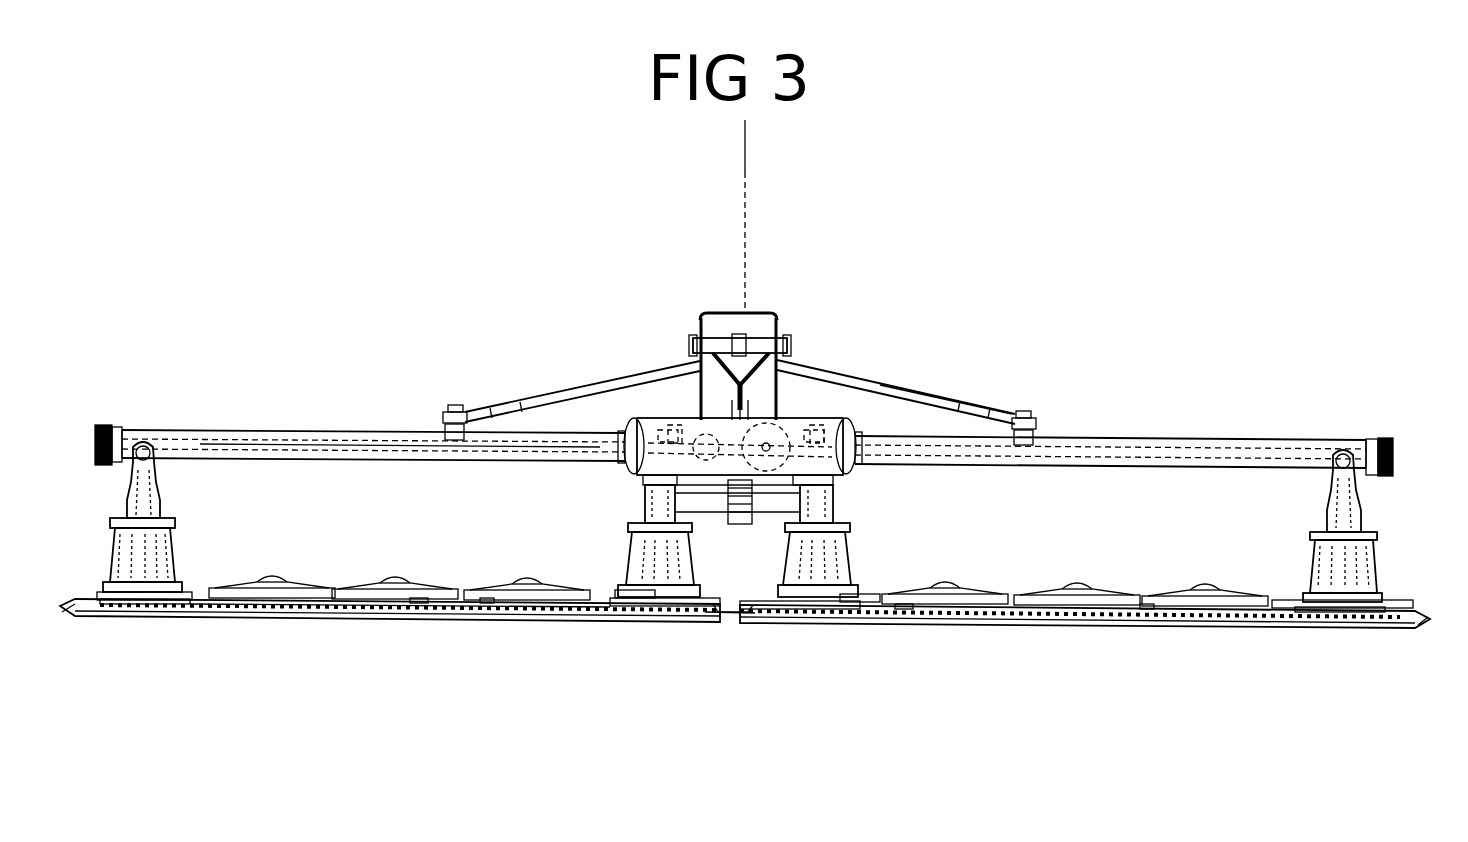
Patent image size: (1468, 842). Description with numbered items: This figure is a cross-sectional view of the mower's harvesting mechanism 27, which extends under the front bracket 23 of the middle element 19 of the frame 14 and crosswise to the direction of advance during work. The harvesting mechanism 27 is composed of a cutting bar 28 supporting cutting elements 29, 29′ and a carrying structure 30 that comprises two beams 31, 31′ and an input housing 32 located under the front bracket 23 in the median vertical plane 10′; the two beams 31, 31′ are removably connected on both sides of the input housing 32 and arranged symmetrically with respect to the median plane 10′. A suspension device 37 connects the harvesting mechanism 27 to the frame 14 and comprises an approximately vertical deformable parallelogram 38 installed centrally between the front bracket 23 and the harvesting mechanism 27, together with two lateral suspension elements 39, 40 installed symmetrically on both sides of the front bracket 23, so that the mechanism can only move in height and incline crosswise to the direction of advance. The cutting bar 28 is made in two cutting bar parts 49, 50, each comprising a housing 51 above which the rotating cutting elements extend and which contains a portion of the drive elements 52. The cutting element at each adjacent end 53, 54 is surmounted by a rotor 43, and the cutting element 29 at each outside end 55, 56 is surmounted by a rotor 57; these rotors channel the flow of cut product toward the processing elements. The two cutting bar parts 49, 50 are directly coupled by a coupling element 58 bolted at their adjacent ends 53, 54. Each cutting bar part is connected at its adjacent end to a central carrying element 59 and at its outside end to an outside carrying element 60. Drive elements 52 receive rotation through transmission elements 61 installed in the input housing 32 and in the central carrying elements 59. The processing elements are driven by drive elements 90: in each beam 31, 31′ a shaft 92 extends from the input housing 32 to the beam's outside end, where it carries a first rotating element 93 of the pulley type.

The median vertical plane 10′ is at (745, 158).
The frame 14 is at (701, 319).
The middle element 19 is at (727, 313).
The front bracket 23 is at (727, 316).
The harvesting mechanism 27 is at (1248, 443).
The cutting bar 28 is at (585, 622).
The cutting element 29 is at (173, 614).
The cutting element 29′ is at (298, 586).
The carrying structure 30 is at (213, 433).
The beam 31 is at (318, 430).
The beam 31′ is at (1167, 440).
The input housing 32 is at (687, 425).
The suspension device 37 is at (905, 384).
The deformable parallelogram 38 is at (763, 312).
The lateral suspension element 39 is at (545, 392).
The lateral suspension element 40 is at (948, 398).
The rotor 43 is at (630, 560).
The cutting bar part 49 is at (336, 622).
The cutting bar part 50 is at (1040, 625).
The housing 51 is at (423, 617).
The drive elements 52 is at (497, 625).
The end 53 is at (697, 622).
The end 54 is at (770, 622).
The outside end 55 is at (90, 616).
The outside end 56 is at (1410, 630).
The rotor 57 is at (112, 563).
The coupling element 58 is at (733, 620).
The central carrying element 59 is at (644, 492).
The outside carrying element 60 is at (153, 482).
The transmission elements 61 is at (700, 432).
The drive elements 90 is at (418, 438).
The shaft 92 is at (378, 440).
The first rotating element 93 is at (100, 428).